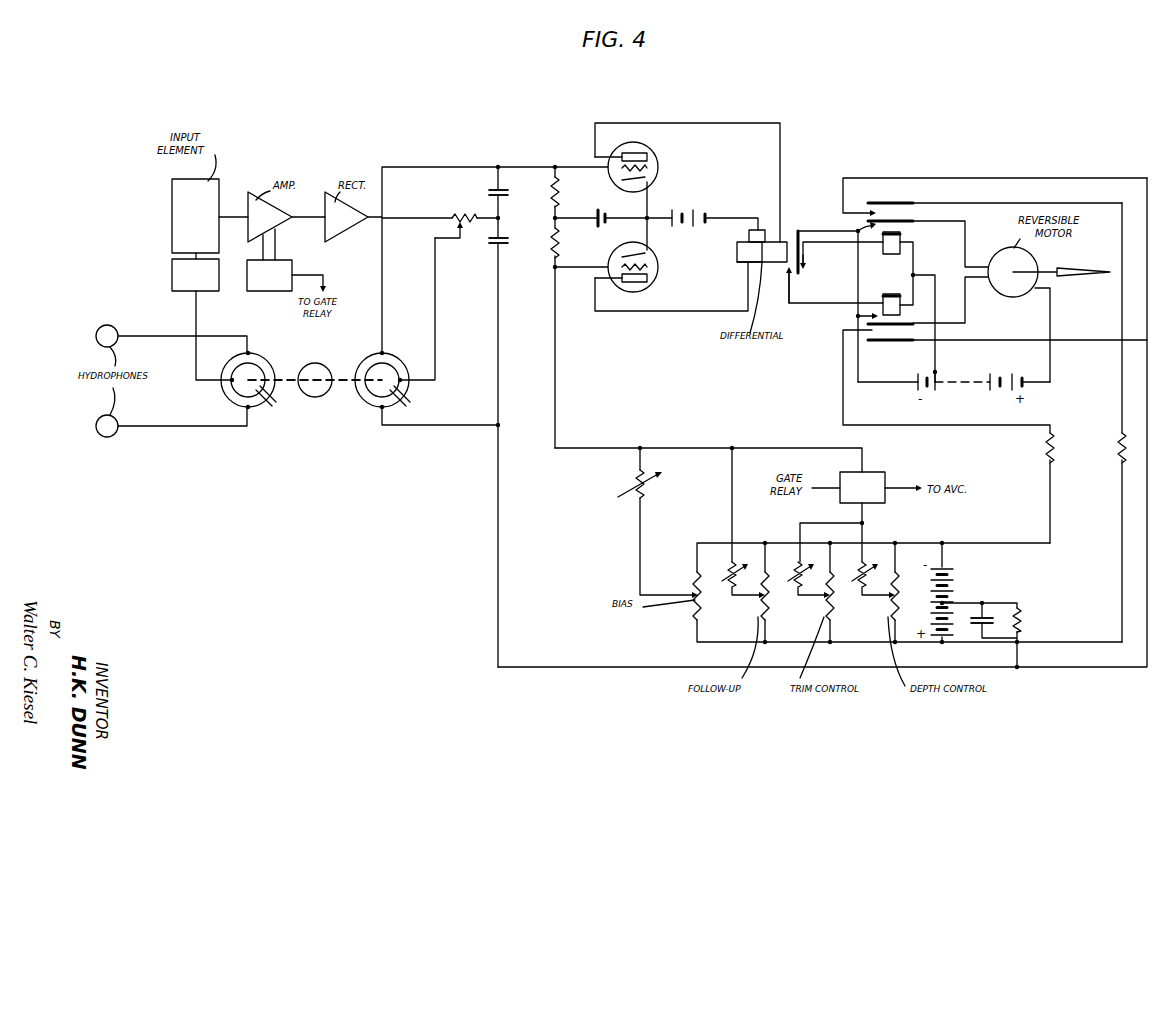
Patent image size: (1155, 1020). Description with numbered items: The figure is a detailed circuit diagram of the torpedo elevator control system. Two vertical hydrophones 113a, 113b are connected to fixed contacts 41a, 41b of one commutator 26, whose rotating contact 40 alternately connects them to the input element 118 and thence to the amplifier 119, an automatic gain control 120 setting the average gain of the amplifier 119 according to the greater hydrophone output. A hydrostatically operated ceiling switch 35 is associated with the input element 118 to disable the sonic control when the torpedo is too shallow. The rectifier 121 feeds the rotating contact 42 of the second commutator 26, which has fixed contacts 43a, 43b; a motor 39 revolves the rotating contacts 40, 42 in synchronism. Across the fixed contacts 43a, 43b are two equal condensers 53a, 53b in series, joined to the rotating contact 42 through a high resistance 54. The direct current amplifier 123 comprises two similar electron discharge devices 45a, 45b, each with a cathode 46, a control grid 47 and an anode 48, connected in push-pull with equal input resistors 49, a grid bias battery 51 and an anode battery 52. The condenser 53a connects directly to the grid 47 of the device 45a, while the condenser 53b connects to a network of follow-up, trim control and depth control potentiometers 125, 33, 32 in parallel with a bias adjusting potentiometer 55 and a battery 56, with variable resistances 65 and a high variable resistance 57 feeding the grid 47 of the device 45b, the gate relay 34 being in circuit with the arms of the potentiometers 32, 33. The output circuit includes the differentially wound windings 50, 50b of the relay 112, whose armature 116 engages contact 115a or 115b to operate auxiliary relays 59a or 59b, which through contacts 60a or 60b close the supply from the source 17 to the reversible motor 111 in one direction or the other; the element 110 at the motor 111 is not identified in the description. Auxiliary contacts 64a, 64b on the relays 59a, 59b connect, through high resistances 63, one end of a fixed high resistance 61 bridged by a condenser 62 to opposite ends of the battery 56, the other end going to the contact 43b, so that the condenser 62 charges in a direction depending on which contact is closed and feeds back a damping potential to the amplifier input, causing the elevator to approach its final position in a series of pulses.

The direct current amplifier 123 is at (682, 197).
The input element 118 is at (172, 216).
The ceiling switch 35 is at (172, 273).
The amplifier 119 is at (283, 222).
The rectifier 121 is at (345, 224).
The automatic gain control 120 is at (265, 292).
The hydrophone 113a is at (110, 325).
The hydrophone 113b is at (112, 437).
The rotating contact 40 is at (238, 365).
The fixed contact 41a is at (261, 360).
The fixed contact 41b is at (228, 404).
The commutator 26 is at (378, 358).
The motor 39 is at (317, 397).
The rotating contact 42 is at (398, 367).
The fixed contact 43a is at (388, 356).
The fixed contact 43b is at (374, 402).
The high resistance 54 is at (462, 210).
The condenser 53a is at (512, 193).
The condenser 53b is at (512, 242).
The input resistor 49 is at (568, 258).
The grid bias battery 51 is at (604, 226).
The cathode 46 is at (640, 252).
The electron discharge device 45a is at (660, 162).
The electron discharge device 45b is at (658, 285).
The anode 48 is at (635, 283).
The control grid 47 is at (650, 270).
The anode battery 52 is at (688, 210).
The differentially wound winding 50b is at (772, 242).
The relay 112 is at (737, 250).
The differentially wound winding 50 is at (745, 262).
The armature 116 is at (798, 232).
The contact 115a is at (803, 268).
The contact 115b is at (790, 272).
The contact 60a is at (865, 228).
The contact 60b is at (856, 318).
The auxiliary contact 64a is at (873, 210).
The auxiliary contact 64b is at (875, 342).
The auxiliary relay 59a is at (900, 237).
The auxiliary relay 59b is at (898, 296).
The motor 111 is at (1012, 297).
The motor shaft 110 is at (1111, 271).
The power source 17 is at (967, 378).
The high resistance 63 is at (1117, 450).
The gate relay 34 is at (872, 472).
The high variable resistance 57 is at (630, 484).
The variable resistance 65 is at (858, 565).
The bias adjusting potentiometer 55 is at (695, 578).
The follow-up potentiometer 125 is at (768, 607).
The trim control potentiometer 33 is at (830, 606).
The depth control potentiometer 32 is at (895, 606).
The battery 56 is at (955, 580).
The condenser 62 is at (983, 612).
The fixed high resistance 61 is at (1025, 617).